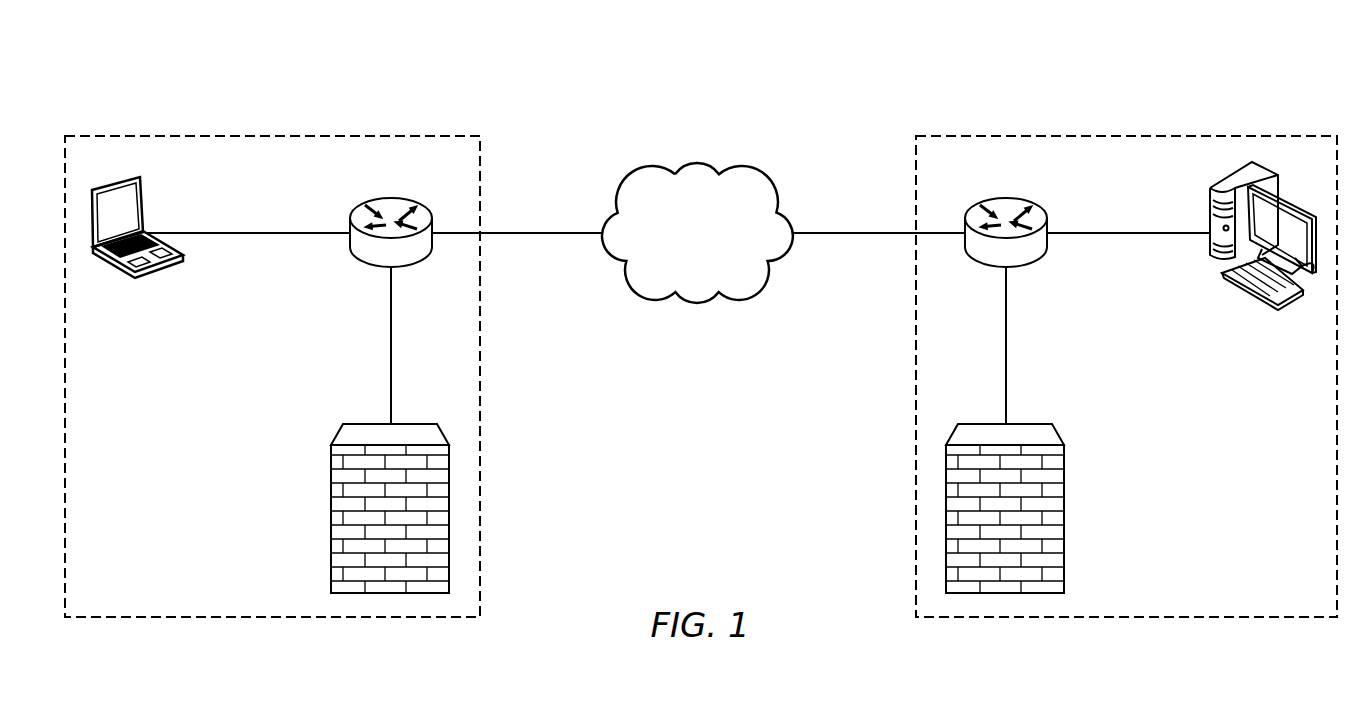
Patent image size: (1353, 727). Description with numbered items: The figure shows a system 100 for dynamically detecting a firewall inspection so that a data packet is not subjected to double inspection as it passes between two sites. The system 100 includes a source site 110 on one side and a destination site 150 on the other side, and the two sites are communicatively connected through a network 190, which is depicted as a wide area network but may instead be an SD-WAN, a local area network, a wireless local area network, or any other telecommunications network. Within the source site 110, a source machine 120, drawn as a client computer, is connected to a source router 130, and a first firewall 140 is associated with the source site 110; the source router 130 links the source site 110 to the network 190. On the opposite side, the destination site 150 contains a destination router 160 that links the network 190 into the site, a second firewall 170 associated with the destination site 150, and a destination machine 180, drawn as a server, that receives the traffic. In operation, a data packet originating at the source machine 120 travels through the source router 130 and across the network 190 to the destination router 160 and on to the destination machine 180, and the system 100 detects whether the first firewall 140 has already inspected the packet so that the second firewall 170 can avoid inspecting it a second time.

The system 100 is at (918, 38).
The source site 110 is at (203, 136).
The source machine 120 is at (147, 200).
The source router 130 is at (405, 200).
The first firewall 140 is at (331, 461).
The destination site 150 is at (1193, 136).
The destination router 160 is at (1018, 200).
The second firewall 170 is at (1064, 460).
The destination machine 180 is at (1216, 186).
The network 190 is at (697, 233).